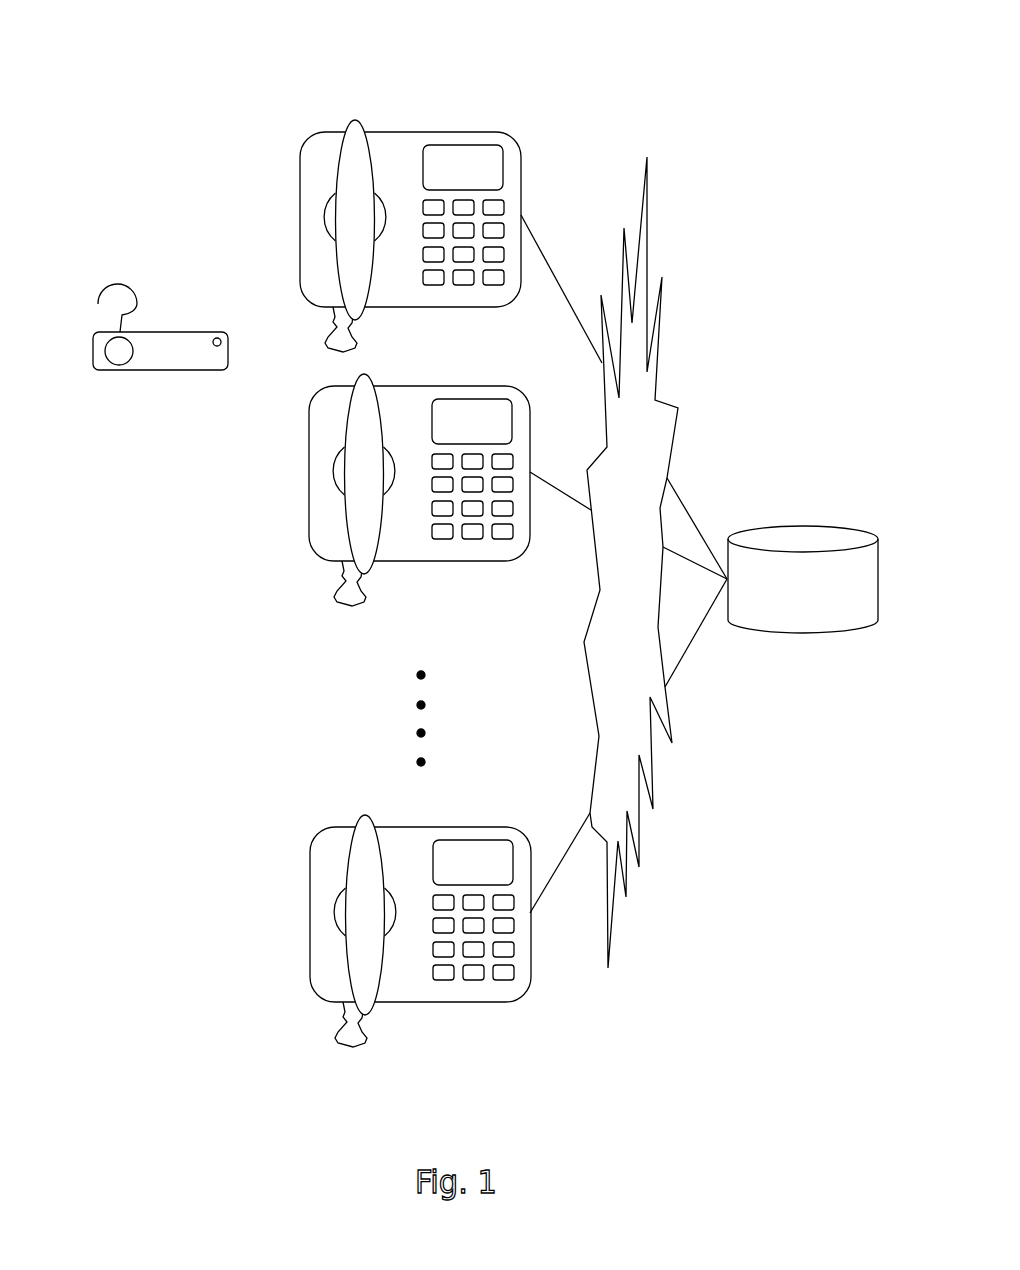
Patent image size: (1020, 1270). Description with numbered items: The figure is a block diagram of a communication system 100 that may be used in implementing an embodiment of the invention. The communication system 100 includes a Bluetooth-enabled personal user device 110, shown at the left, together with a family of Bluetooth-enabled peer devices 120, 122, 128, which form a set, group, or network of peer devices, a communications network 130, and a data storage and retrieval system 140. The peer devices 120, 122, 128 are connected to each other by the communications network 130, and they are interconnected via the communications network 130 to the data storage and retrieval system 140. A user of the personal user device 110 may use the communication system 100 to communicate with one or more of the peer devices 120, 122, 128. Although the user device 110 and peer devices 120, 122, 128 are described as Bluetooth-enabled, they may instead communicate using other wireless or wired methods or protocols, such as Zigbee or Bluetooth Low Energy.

The communication system 100 is at (820, 68).
The Bluetooth-enabled personal user device 110 is at (170, 353).
The Bluetooth-enabled peer device 120 is at (398, 157).
The Bluetooth-enabled peer device 122 is at (413, 542).
The Bluetooth-enabled peer device 128 is at (413, 983).
The communications network 130 is at (624, 562).
The data storage and retrieval system 140 is at (803, 579).